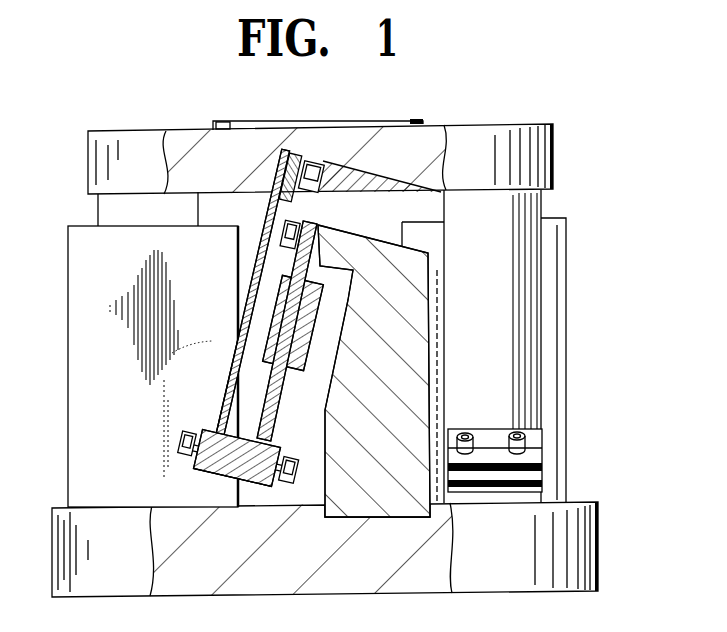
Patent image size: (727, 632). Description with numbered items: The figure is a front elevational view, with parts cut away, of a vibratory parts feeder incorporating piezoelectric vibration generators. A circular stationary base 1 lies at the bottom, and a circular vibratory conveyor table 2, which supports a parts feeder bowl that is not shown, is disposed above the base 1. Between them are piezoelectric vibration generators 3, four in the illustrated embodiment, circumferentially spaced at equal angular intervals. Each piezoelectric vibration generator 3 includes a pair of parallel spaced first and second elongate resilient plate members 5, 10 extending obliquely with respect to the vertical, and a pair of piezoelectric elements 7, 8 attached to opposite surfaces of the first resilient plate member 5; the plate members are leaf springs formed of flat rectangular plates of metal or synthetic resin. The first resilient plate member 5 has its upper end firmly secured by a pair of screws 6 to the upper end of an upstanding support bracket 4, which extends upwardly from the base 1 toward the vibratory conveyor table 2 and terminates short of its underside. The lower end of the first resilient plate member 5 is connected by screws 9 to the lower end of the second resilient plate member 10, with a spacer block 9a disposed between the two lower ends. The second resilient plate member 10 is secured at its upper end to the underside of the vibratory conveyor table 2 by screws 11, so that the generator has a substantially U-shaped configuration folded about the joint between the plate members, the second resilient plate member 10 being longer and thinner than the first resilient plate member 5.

The stationary base 1 is at (588, 557).
The vibratory conveyor table 2 is at (474, 132).
The piezoelectric vibration generator 3 is at (265, 228).
The support bracket 4 is at (378, 246).
The first resilient plate member 5 is at (277, 449).
The screws 6 is at (294, 222).
The piezoelectric element 7 is at (301, 366).
The piezoelectric element 8 is at (272, 358).
The screws 9 is at (187, 455).
The spacer block 9a is at (228, 471).
The second resilient plate member 10 is at (240, 383).
The screws 11 is at (311, 162).